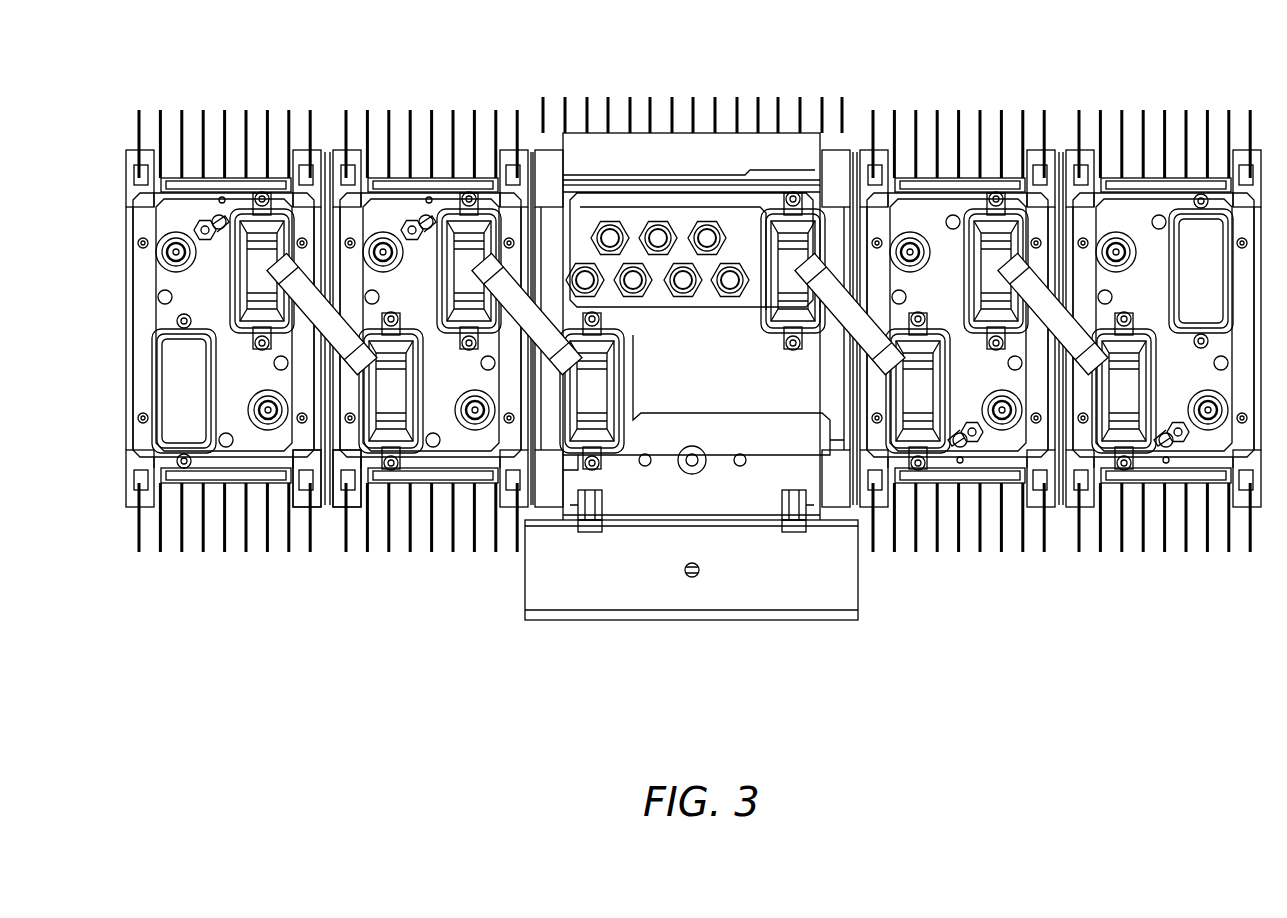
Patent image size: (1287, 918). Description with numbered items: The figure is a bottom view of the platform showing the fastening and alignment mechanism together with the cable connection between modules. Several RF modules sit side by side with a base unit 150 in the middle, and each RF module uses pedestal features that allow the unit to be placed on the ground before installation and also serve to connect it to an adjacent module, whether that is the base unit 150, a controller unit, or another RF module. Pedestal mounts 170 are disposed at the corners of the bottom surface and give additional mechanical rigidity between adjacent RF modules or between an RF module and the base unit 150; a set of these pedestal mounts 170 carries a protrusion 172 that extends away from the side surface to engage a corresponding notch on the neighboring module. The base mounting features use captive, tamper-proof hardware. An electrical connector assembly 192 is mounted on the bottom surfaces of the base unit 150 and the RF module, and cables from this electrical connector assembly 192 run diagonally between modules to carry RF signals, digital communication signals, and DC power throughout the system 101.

The system 101 is at (693, 402).
The base unit 150 is at (821, 652).
The pedestal mount 170 is at (307, 502).
The protrusion 172 is at (327, 472).
The electrical connector assembly 192 is at (262, 257).